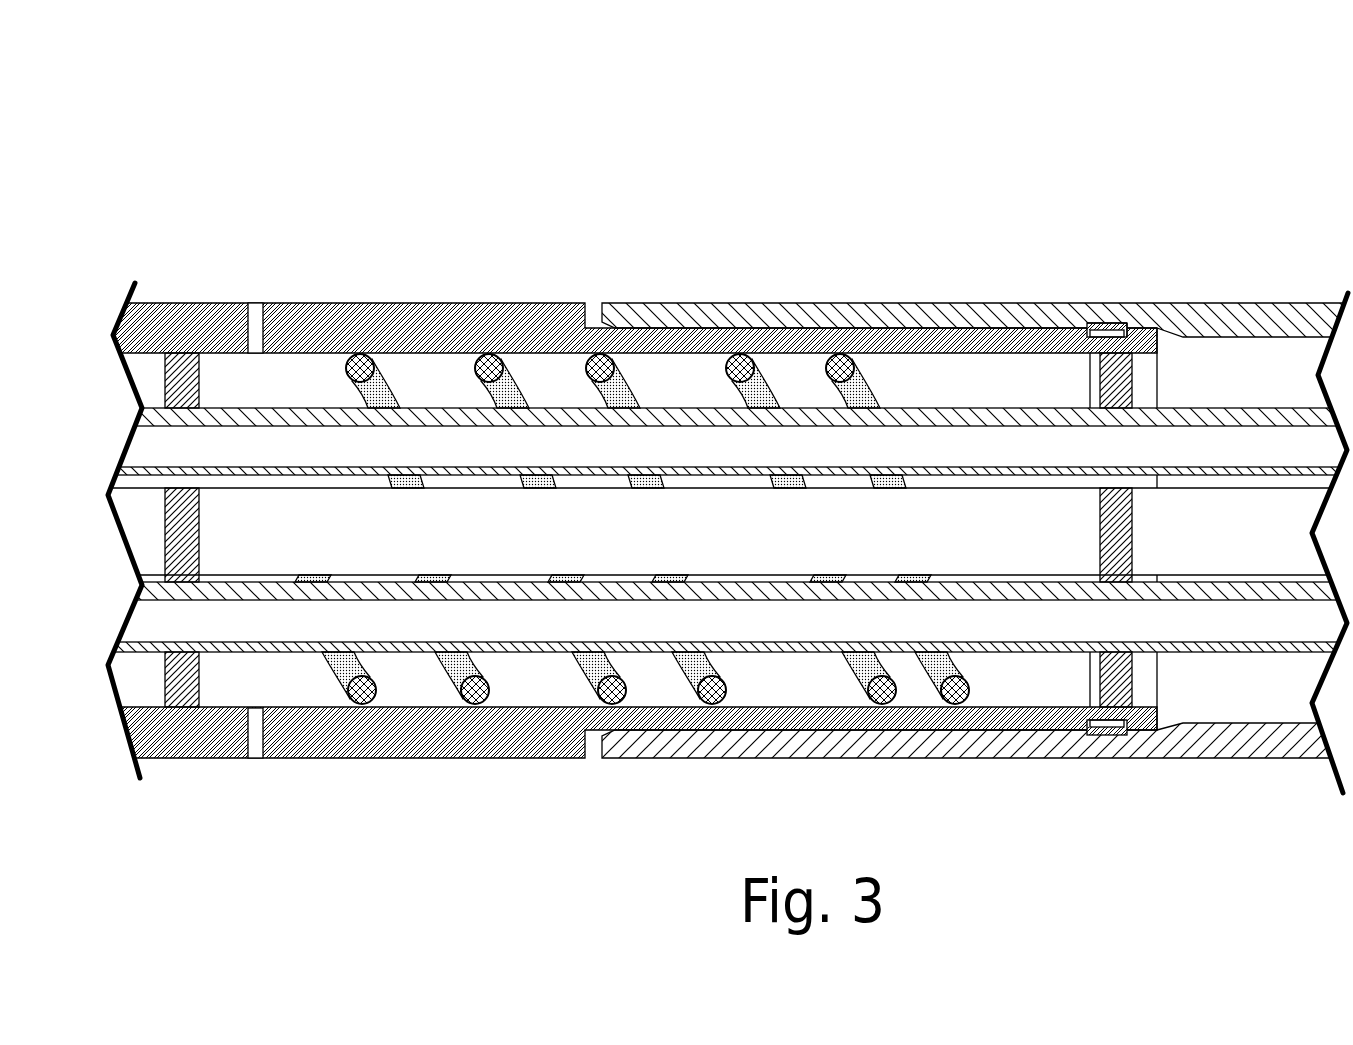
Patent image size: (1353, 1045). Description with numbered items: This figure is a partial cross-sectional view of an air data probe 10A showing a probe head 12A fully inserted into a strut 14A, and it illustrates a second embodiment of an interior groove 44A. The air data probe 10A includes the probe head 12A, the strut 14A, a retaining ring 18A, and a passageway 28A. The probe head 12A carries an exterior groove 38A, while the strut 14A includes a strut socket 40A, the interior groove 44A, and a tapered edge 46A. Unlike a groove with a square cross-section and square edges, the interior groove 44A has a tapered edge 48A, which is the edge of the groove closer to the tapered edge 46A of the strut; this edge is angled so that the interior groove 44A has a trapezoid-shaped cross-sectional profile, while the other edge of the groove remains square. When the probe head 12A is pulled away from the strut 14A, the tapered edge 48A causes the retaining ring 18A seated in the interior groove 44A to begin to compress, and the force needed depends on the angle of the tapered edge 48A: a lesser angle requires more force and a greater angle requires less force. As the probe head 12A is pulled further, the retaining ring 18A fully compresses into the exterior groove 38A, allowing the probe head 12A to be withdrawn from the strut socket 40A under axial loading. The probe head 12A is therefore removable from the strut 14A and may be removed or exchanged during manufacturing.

The air data probe 10A is at (129, 407).
The probe head 12A is at (628, 459).
The strut 14A is at (1298, 485).
The retaining ring 18A is at (1092, 327).
The passageway 28A is at (673, 303).
The exterior groove 38A is at (1127, 325).
The strut socket 40A is at (1170, 328).
The interior groove 44A is at (1107, 323).
The tapered edge 46A is at (601, 735).
The tapered edge 48A is at (1087, 328).